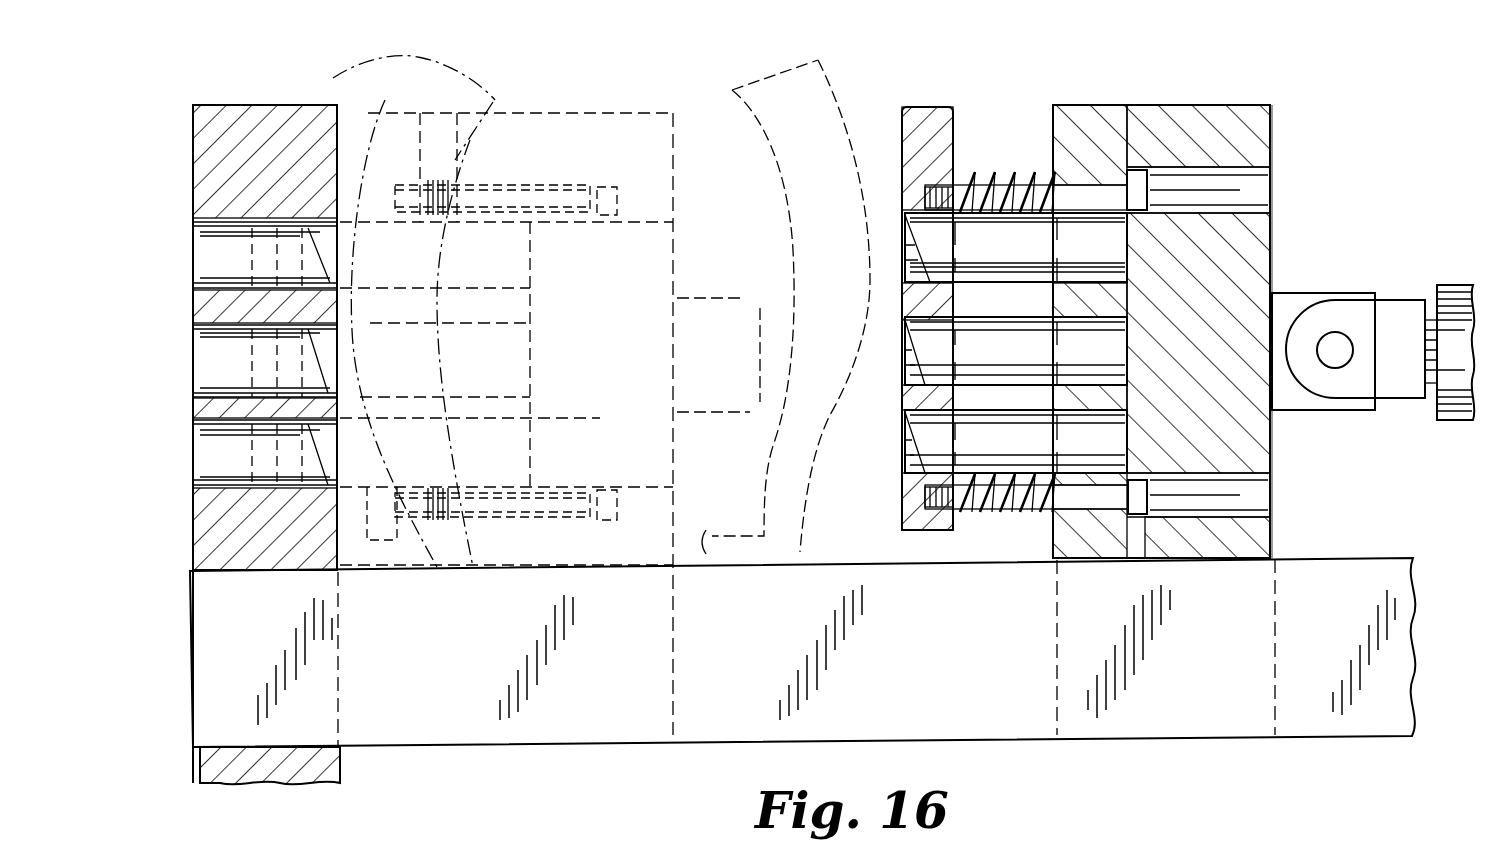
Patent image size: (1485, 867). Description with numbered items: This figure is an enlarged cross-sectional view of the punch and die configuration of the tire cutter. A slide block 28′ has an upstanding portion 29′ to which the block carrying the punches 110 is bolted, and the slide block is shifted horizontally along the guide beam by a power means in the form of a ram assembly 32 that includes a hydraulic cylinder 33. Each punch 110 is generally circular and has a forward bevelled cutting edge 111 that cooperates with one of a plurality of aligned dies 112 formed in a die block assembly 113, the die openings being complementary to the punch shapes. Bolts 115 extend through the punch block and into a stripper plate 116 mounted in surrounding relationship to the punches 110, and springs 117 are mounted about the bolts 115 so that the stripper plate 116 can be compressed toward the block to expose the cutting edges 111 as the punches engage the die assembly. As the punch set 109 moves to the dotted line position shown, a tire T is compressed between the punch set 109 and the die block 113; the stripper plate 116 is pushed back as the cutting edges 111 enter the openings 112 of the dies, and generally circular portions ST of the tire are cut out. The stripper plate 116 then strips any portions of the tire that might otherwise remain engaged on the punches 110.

The punch set 109 is at (983, 580).
The die block assembly 113 is at (312, 592).
The dies 112 is at (300, 245).
The cut portions of the tire ST is at (262, 236).
The punches 110 is at (515, 275).
The bolts 115 is at (497, 190).
The stripper plate 116 is at (385, 100).
The tire T is at (792, 483).
The cutting edges 111 is at (850, 362).
The springs 117 is at (1058, 202).
The upstanding portion 29′ is at (1268, 132).
The slide block 28′ is at (1298, 458).
The ram assembly 32 is at (1456, 270).
The hydraulic cylinder 33 is at (1450, 422).